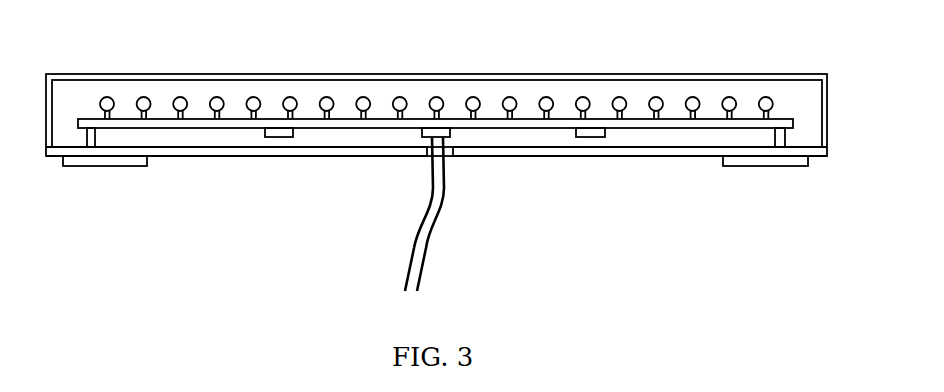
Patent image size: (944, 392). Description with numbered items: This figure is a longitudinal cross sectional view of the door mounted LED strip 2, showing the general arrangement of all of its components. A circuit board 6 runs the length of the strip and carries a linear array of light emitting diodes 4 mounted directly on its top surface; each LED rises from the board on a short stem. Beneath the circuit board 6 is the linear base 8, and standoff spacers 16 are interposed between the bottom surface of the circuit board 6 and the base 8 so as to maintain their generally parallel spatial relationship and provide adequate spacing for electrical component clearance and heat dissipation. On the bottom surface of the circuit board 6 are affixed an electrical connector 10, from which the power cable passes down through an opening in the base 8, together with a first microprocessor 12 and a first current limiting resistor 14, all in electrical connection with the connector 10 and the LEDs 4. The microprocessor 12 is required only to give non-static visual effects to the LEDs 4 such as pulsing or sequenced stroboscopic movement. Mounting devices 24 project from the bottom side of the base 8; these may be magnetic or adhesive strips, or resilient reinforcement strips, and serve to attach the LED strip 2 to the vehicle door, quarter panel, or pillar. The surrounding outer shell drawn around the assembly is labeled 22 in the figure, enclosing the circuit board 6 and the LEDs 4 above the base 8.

The LED strip 2 is at (130, 242).
The light emitting diodes 4 is at (766, 97).
The circuit board 6 is at (793, 123).
The base 8 is at (808, 152).
The electrical connector 10 is at (452, 138).
The first microprocessor 12 is at (283, 137).
The first current limiting resistor 14 is at (590, 137).
The standoff spacers 16 is at (96, 137).
The housing 22 is at (163, 74).
The mounting devices 24 is at (765, 167).